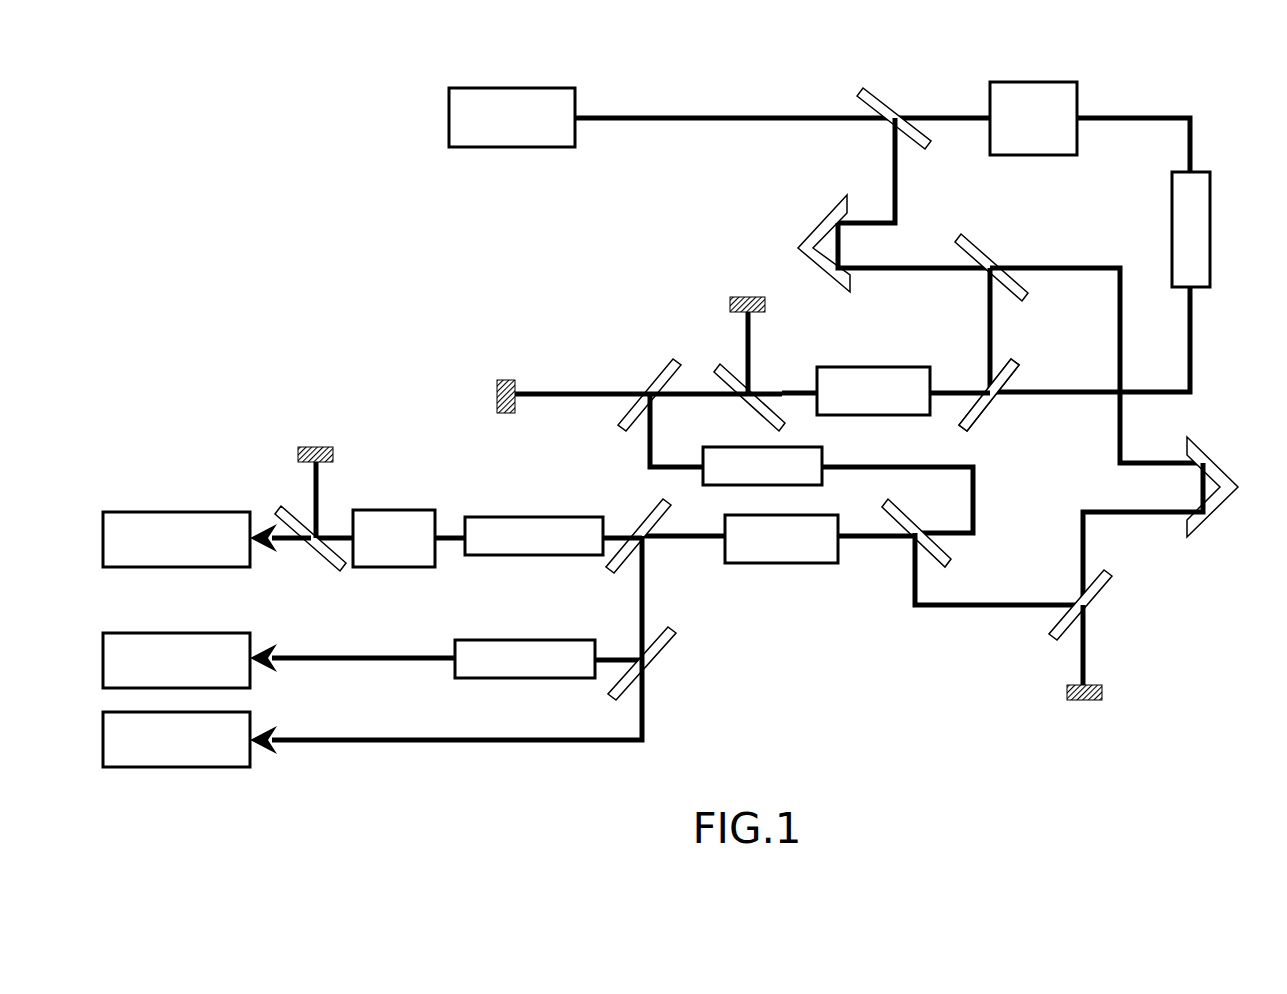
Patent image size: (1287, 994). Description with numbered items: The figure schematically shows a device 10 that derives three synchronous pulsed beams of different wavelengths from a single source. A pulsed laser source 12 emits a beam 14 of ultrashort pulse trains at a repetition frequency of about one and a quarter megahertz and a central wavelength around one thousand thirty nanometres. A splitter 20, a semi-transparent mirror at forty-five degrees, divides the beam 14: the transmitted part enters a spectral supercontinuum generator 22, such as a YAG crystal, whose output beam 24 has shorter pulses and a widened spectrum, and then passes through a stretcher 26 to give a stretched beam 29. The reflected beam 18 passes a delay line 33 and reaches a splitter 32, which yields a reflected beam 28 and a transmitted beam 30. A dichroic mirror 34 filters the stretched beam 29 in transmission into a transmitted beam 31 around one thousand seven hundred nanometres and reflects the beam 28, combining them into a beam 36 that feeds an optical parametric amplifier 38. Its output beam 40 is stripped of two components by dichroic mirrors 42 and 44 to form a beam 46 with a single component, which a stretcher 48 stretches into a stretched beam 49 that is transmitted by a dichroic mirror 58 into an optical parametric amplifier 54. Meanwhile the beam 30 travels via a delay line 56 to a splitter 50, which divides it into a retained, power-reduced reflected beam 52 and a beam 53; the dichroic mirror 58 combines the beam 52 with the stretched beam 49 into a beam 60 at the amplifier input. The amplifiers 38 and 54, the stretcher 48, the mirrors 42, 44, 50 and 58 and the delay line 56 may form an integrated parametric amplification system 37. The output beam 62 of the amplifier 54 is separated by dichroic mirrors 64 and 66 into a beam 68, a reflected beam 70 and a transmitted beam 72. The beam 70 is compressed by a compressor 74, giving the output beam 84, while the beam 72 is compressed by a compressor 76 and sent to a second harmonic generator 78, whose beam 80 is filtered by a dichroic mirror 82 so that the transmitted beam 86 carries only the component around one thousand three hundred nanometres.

The device 10 is at (215, 193).
The pulsed laser source 12 is at (512, 117).
The beam 14 is at (714, 117).
The reflected beam 18 is at (892, 152).
The splitter 20 is at (878, 95).
The spectral supercontinuum generator 22 is at (1033, 118).
The beam 24 is at (1137, 115).
The stretcher 26 is at (1191, 229).
The reflected beam 28 is at (995, 340).
The stretched beam 29 is at (1193, 345).
The transmitted beam 30 is at (1050, 265).
The transmitted beam 31 is at (1003, 410).
The splitter 32 is at (983, 247).
The delay line 33 is at (818, 218).
The dichroic mirror 34 is at (985, 420).
The beam 36 is at (960, 400).
The integrated parametric amplification system 37 is at (875, 343).
The optical parametric amplifier 38 is at (897, 379).
The beam 40 is at (782, 388).
The dichroic mirror 42 is at (717, 360).
The dichroic mirror 44 is at (660, 365).
The beam 46 is at (653, 442).
The stretcher 48 is at (762, 466).
The stretched beam 49 is at (977, 470).
The splitter 50 is at (1115, 590).
The reflected beam 52 is at (985, 610).
The beam 53 is at (1088, 640).
The optical parametric amplifier 54 is at (775, 525).
The delay line 56 is at (1228, 475).
The dichroic mirror 58 is at (905, 522).
The beam 60 is at (862, 542).
The beam 62 is at (712, 542).
The dichroic mirror 64 is at (648, 506).
The dichroic mirror 66 is at (680, 646).
The beam 68 is at (692, 742).
The reflected beam 70 is at (605, 645).
The transmitted beam 72 is at (608, 532).
The compressor 74 is at (525, 659).
The compressor 76 is at (534, 536).
The second harmonic generator 78 is at (409, 538).
The beam 80 is at (333, 534).
The dichroic mirror 82 is at (320, 566).
The beam 84 is at (279, 660).
The transmitted beam 86 is at (207, 539).